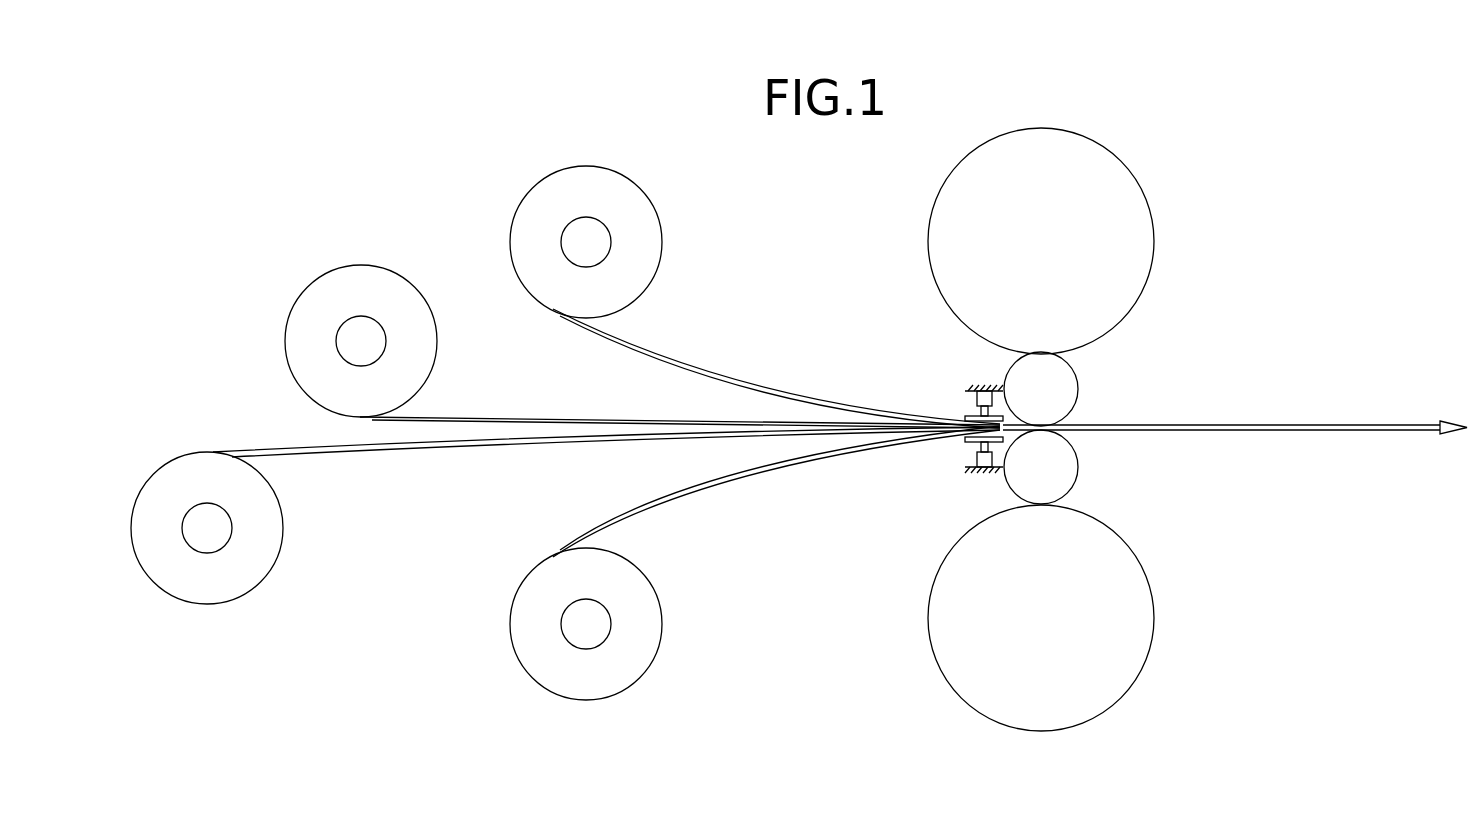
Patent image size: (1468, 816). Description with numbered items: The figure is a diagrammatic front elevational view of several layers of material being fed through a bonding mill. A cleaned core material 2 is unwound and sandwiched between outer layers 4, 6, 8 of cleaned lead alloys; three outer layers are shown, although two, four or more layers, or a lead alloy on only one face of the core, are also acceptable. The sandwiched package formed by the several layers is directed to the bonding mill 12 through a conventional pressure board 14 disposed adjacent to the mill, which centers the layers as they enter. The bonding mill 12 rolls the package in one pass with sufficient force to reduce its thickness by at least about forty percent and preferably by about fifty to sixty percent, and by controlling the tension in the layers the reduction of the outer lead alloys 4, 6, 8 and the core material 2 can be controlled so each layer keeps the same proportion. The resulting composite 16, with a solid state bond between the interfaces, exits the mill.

The core material 2 is at (572, 440).
The outer layer 4 is at (600, 417).
The outer layer 6 is at (688, 500).
The outer layer 8 is at (660, 352).
The bonding mill 12 is at (1232, 167).
The pressure board 14 is at (955, 450).
The composite 16 is at (1240, 425).